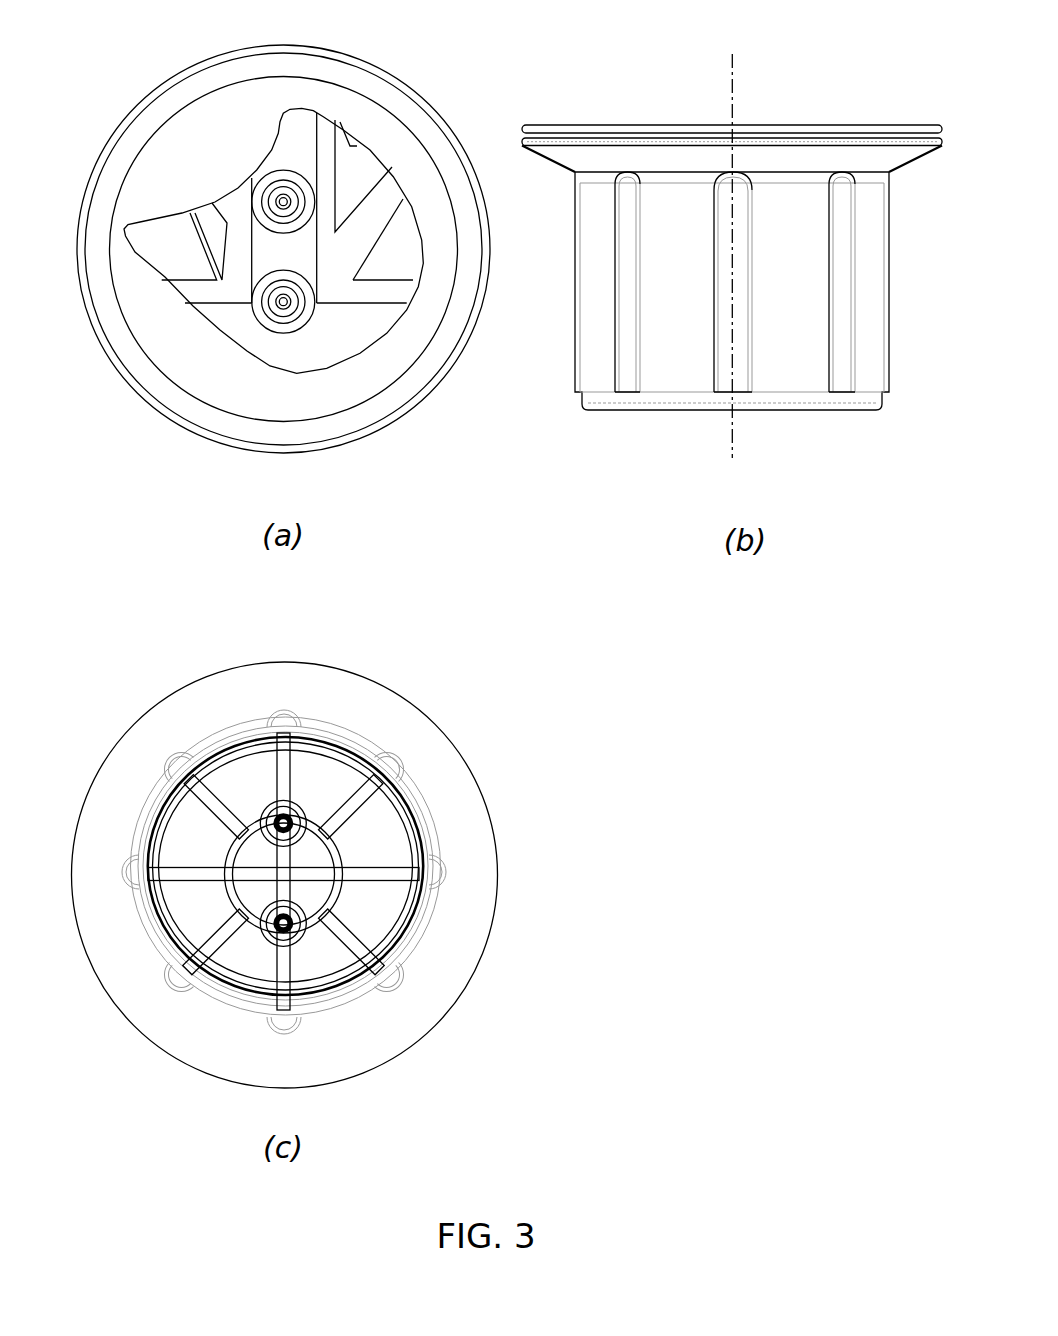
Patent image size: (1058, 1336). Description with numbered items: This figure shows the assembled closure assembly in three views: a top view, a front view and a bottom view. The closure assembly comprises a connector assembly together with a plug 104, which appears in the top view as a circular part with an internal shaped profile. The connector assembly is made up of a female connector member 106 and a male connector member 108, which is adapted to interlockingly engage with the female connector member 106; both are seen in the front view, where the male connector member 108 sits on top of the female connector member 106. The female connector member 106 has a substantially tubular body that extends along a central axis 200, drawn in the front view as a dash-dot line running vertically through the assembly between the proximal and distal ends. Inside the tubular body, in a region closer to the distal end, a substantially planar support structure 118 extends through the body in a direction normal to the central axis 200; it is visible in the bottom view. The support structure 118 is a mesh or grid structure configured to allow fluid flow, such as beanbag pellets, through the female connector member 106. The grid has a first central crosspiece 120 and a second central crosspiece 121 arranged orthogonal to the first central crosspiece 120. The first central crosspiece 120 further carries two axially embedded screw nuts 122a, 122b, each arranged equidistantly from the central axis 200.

The plug 104 is at (186, 137).
The female connector member 106 is at (664, 389).
The male connector member 108 is at (606, 135).
The central axis 200 is at (738, 88).
The support structure 118 is at (370, 867).
The first central crosspiece 120 is at (294, 782).
The second central crosspiece 121 is at (187, 865).
The screw nut 122a is at (280, 818).
The screw nut 122b is at (300, 929).